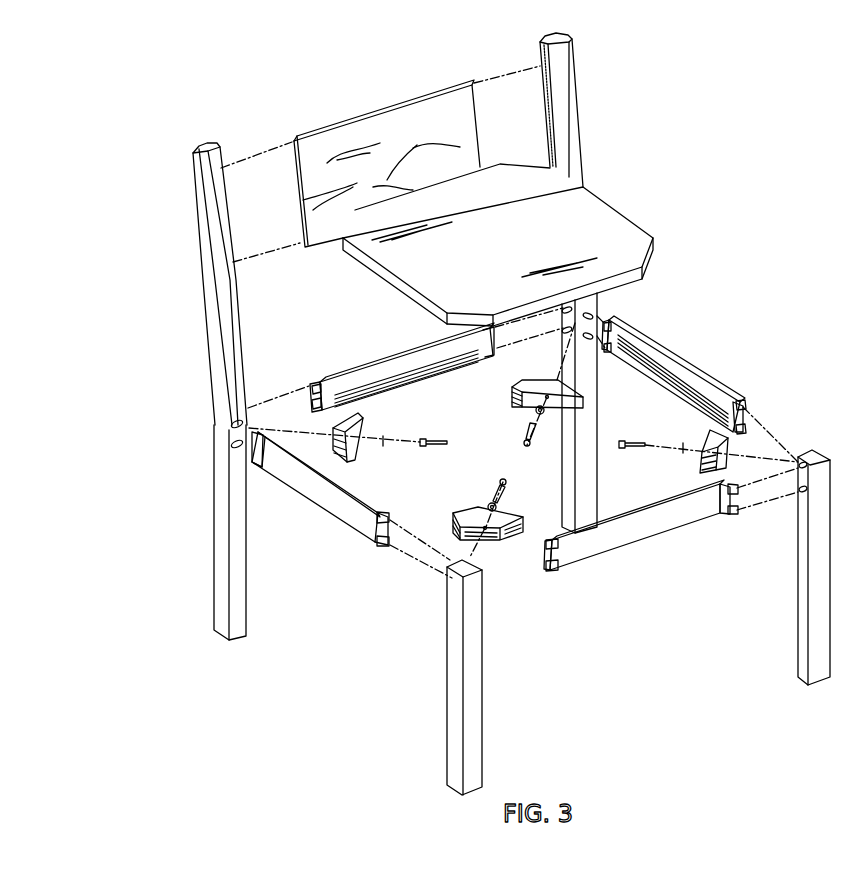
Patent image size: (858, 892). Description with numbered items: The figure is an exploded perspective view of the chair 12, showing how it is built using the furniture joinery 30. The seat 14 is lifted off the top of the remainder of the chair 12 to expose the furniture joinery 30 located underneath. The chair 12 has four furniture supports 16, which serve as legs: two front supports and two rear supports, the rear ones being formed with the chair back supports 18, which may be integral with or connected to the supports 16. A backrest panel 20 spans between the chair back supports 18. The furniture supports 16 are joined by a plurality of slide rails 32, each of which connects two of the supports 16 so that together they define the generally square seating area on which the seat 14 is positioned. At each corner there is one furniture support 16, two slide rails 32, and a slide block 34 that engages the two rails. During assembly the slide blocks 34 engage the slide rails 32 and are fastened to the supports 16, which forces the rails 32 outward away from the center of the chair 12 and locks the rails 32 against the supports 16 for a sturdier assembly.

The chair 12 is at (603, 89).
The seat 14 is at (493, 252).
The furniture support 16 is at (614, 390).
The chair back support 18 is at (574, 123).
The backrest panel 20 is at (375, 131).
The furniture joinery 30 is at (360, 475).
The slide rail 32 is at (360, 368).
The slide block 34 is at (383, 427).